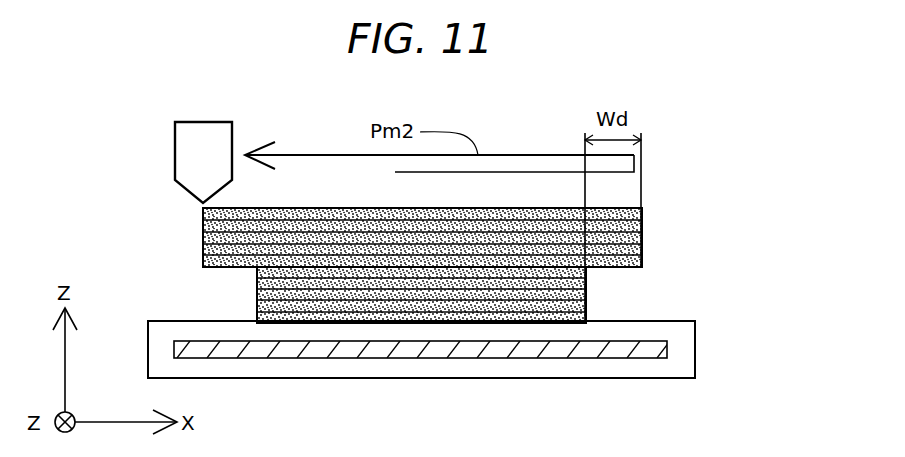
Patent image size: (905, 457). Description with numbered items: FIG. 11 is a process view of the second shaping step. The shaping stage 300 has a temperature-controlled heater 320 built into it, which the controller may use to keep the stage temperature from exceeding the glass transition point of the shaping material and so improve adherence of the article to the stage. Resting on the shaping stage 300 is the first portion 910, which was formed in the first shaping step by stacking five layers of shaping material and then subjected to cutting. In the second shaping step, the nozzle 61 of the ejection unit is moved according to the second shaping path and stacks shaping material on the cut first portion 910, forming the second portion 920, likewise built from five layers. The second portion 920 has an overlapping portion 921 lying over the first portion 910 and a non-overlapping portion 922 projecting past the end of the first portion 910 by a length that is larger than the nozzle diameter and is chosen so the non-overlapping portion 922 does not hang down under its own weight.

The nozzle 61 is at (175, 150).
The shaping stage 300 is at (695, 351).
The temperature-controlled heater 320 is at (617, 362).
The first portion 910 is at (586, 297).
The second portion 920 is at (642, 237).
The overlapping portion 921 is at (376, 204).
The non-overlapping portion 922 is at (197, 265).